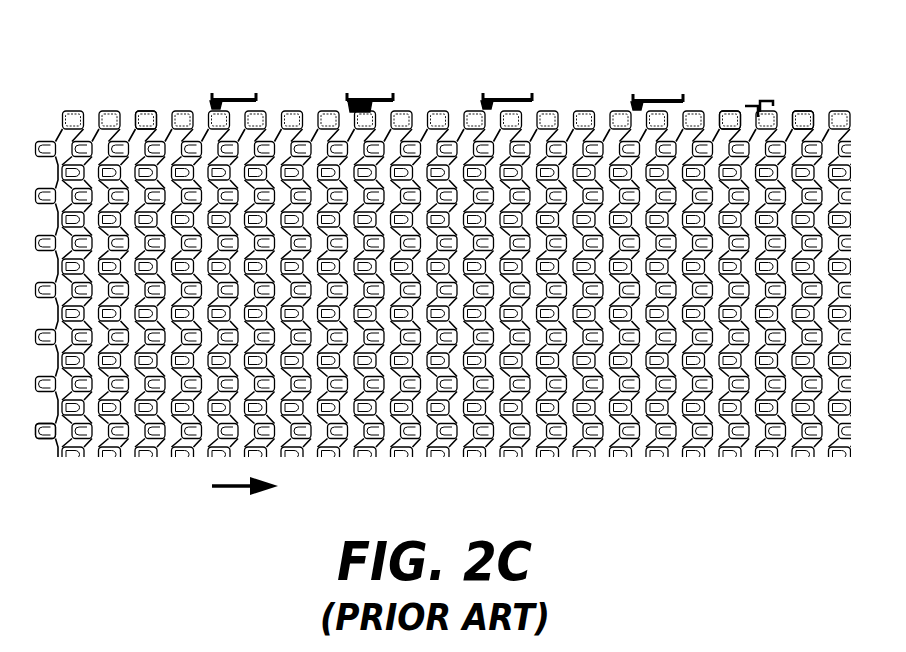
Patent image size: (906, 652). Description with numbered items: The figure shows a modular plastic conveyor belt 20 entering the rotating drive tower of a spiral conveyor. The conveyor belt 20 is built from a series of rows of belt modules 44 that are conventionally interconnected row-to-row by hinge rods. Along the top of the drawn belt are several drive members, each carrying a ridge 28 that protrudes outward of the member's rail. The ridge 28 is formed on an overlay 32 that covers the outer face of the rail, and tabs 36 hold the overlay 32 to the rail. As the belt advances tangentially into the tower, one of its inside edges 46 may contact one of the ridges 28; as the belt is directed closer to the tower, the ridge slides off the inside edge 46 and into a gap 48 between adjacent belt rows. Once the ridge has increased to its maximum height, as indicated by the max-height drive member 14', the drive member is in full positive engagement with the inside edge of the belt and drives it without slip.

The max-height drive member 14' is at (811, 109).
The conveyor belt 20 is at (545, 441).
The ridge 28 is at (222, 100).
The overlay 32 is at (725, 108).
The tabs 36 is at (768, 102).
The belt modules 44 is at (62, 452).
The inside edge 46 is at (147, 109).
The gap 48 is at (348, 112).